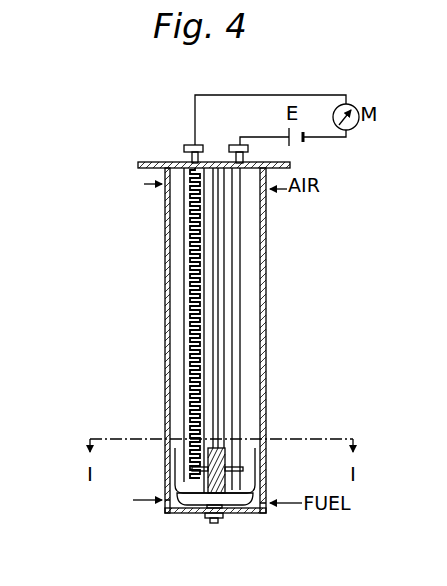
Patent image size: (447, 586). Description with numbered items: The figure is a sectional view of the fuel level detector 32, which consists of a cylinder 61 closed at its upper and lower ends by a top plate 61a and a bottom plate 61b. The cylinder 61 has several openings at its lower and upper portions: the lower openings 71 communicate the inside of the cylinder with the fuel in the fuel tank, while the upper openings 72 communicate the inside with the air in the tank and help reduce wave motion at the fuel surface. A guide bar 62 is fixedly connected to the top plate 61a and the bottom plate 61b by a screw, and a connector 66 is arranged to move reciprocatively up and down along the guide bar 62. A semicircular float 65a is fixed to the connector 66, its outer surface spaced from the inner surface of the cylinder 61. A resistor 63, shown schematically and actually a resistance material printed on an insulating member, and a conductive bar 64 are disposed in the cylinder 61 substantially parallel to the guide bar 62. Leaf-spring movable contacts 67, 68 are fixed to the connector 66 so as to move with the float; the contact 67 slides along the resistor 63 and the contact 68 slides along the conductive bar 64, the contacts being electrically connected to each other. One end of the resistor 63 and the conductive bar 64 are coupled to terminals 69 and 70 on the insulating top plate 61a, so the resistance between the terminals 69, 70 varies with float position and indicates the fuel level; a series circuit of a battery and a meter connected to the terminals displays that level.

The fuel level detector 32 is at (116, 206).
The cylinder 61 is at (268, 228).
The top plate 61a is at (283, 161).
The bottom plate 61b is at (253, 512).
The guide bar 62 is at (212, 302).
The resistor 63 is at (189, 246).
The conductive bar 64 is at (241, 288).
The float 65a is at (248, 463).
The connector 66 is at (223, 452).
The movable contact 67 is at (203, 495).
The movable contact 68 is at (236, 519).
The terminal 69 is at (185, 147).
The terminal 70 is at (239, 144).
The opening 71 is at (163, 507).
The opening 72 is at (163, 188).